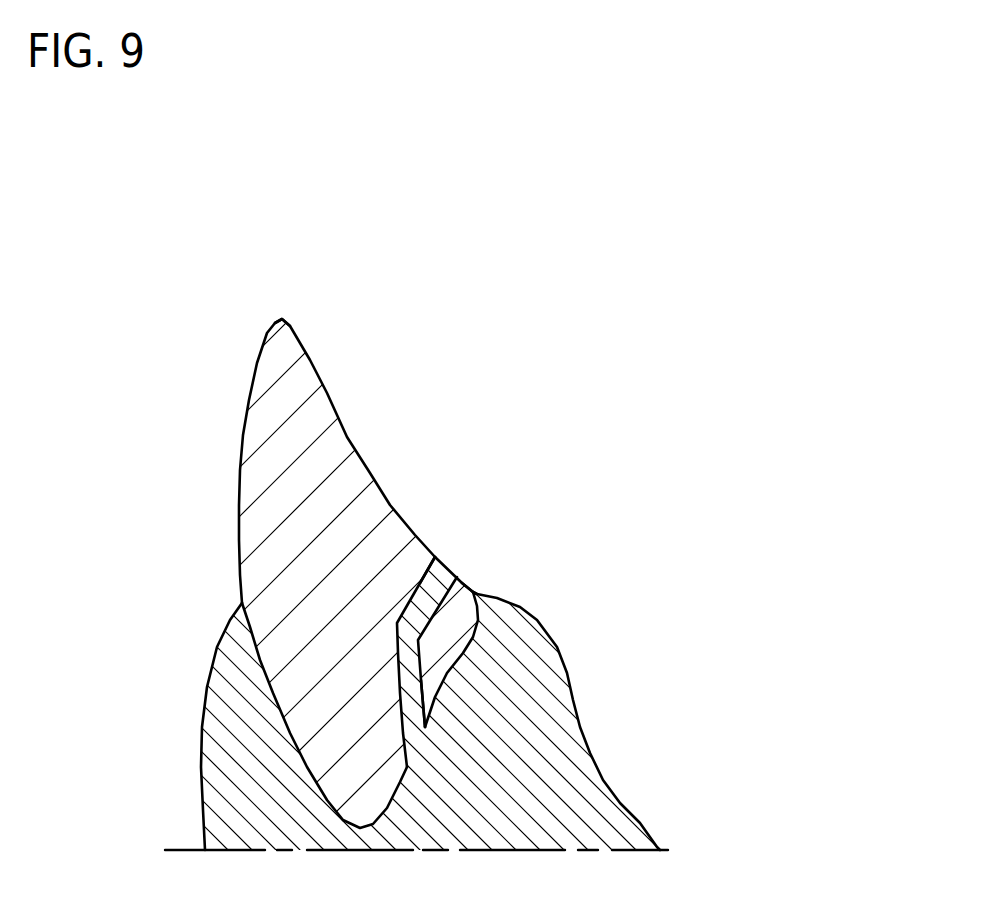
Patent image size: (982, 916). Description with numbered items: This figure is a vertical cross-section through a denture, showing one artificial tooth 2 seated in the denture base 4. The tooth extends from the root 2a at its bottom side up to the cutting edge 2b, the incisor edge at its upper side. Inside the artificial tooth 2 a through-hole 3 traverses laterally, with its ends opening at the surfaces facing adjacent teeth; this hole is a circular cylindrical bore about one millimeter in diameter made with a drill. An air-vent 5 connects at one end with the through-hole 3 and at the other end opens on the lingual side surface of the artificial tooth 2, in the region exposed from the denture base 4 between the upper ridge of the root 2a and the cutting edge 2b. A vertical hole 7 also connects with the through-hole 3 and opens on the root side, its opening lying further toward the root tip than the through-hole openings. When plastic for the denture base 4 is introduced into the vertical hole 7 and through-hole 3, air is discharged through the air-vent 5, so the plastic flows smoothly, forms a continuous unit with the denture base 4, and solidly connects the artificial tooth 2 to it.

The artificial tooth 2 is at (252, 475).
The root 2a is at (474, 592).
The cutting edge 2b is at (282, 322).
The through-hole 3 is at (418, 640).
The denture base 4 is at (518, 736).
The air-vent 5 is at (401, 583).
The vertical hole 7 is at (425, 692).